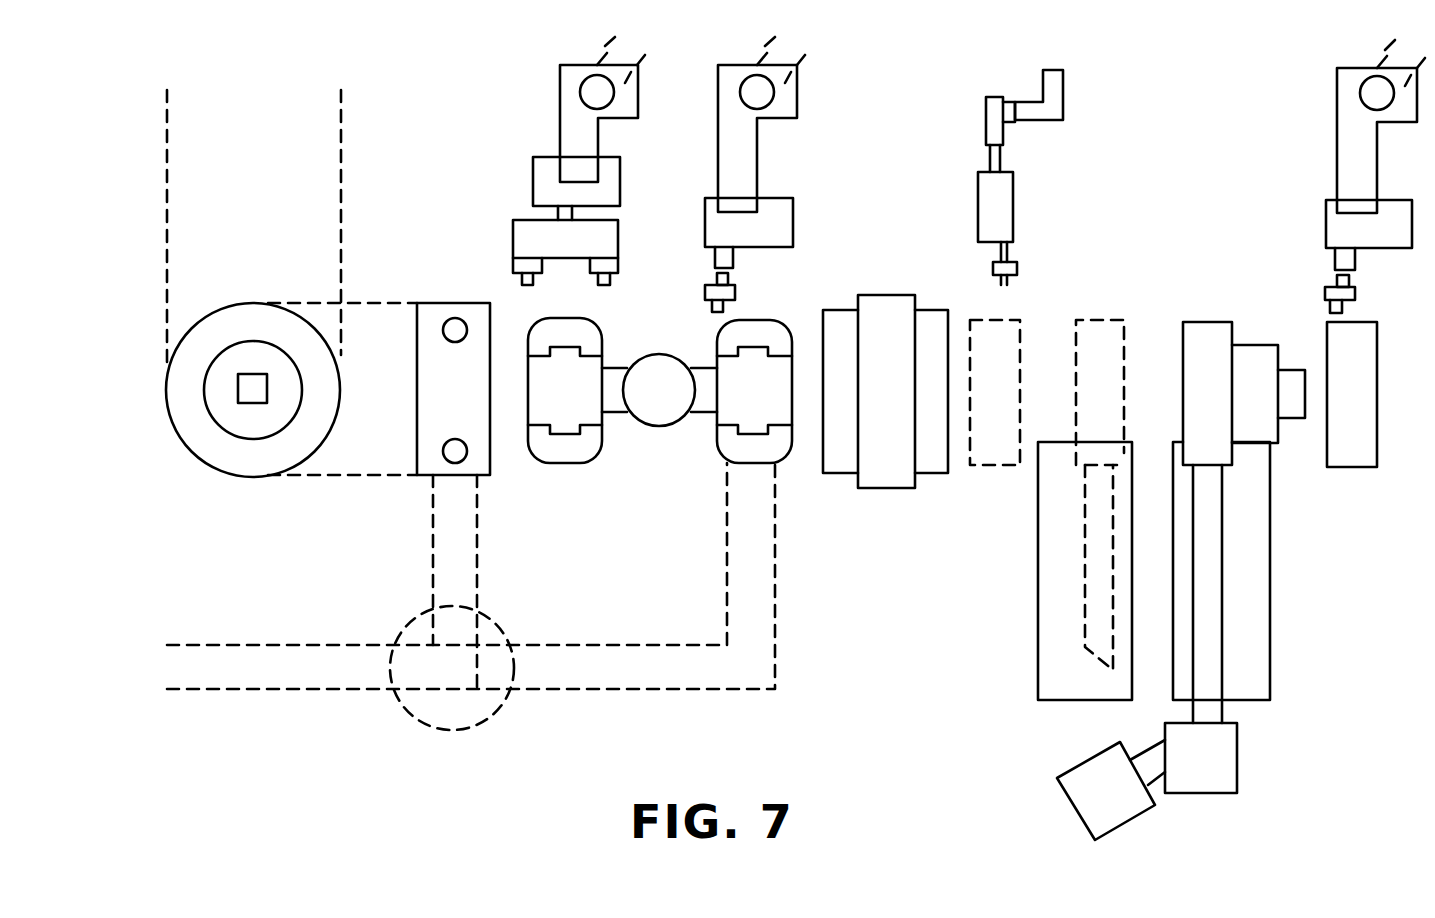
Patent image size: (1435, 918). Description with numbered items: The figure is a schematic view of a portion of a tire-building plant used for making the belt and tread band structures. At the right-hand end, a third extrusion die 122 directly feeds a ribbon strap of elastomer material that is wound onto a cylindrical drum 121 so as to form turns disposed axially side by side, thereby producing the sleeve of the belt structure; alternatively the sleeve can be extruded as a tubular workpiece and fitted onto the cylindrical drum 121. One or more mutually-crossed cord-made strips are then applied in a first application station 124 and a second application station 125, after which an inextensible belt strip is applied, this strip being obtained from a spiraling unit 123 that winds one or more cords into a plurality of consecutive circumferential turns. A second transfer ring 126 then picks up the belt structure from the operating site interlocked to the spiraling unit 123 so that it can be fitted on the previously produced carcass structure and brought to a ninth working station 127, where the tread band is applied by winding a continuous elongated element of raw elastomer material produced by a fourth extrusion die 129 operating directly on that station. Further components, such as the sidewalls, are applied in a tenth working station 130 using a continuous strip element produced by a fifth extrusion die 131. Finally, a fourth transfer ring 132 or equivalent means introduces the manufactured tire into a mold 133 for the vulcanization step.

The cylindrical drum 121 is at (1243, 332).
The third extrusion die 122 is at (1347, 138).
The spiraling unit 123 is at (1005, 198).
The first application station 124 is at (1217, 298).
The second application station 125 is at (1122, 294).
The second transfer ring 126 is at (888, 470).
The ninth working station 127 is at (806, 301).
The fourth extrusion die 129 is at (747, 165).
The tenth working station 130 is at (636, 300).
The fifth extrusion die 131 is at (568, 125).
The fourth transfer ring 132 is at (436, 312).
The mold 133 is at (200, 443).